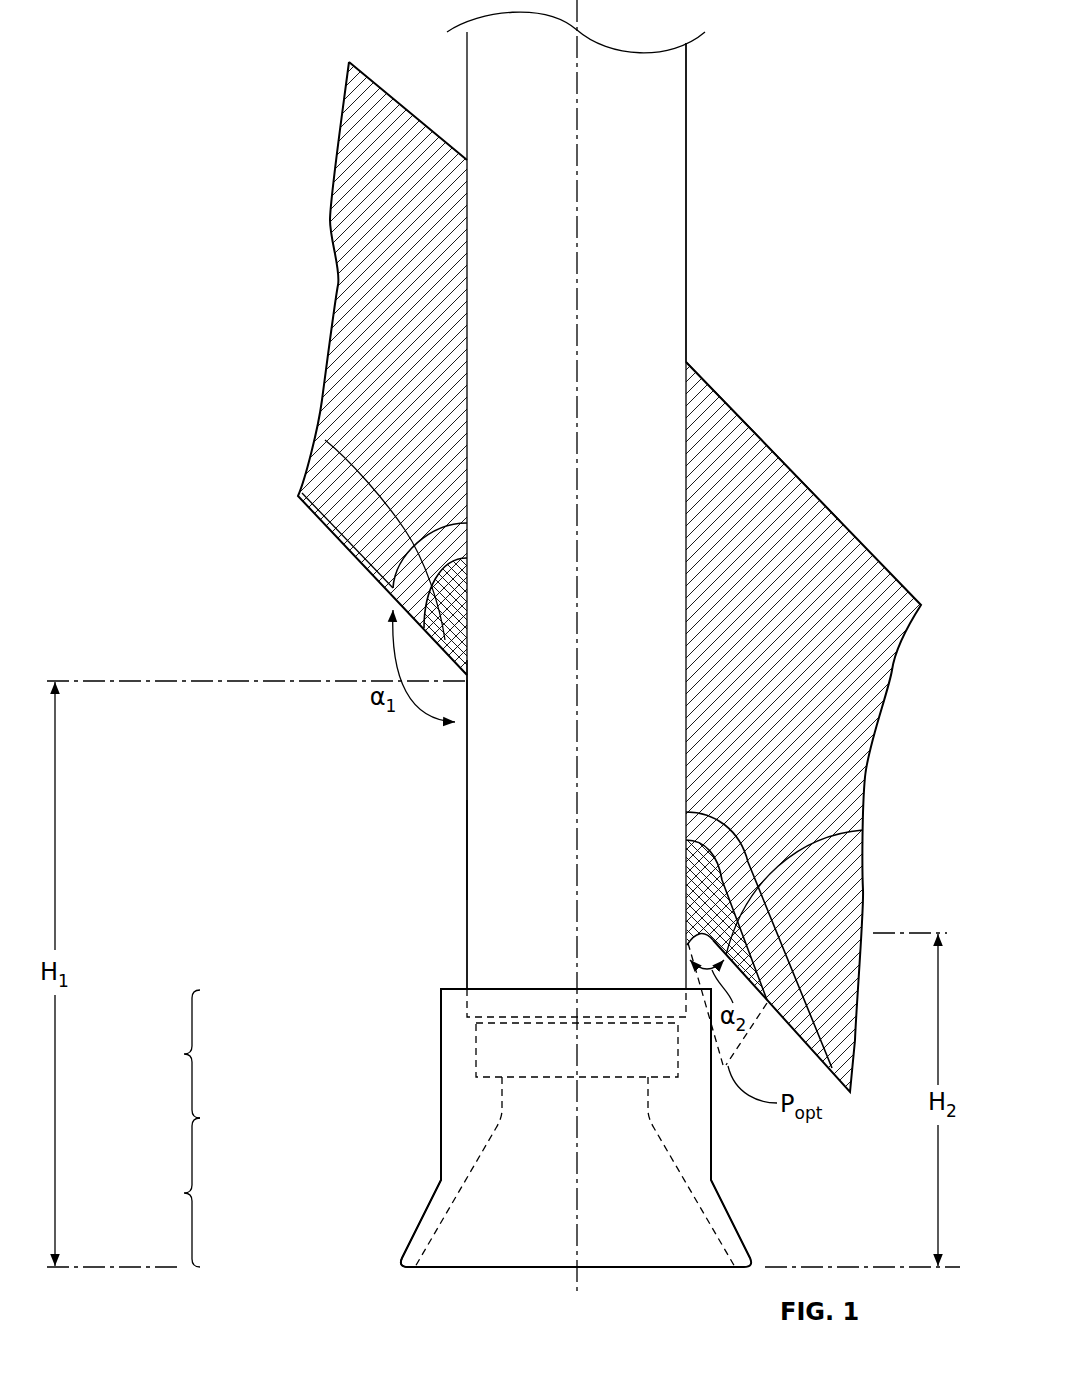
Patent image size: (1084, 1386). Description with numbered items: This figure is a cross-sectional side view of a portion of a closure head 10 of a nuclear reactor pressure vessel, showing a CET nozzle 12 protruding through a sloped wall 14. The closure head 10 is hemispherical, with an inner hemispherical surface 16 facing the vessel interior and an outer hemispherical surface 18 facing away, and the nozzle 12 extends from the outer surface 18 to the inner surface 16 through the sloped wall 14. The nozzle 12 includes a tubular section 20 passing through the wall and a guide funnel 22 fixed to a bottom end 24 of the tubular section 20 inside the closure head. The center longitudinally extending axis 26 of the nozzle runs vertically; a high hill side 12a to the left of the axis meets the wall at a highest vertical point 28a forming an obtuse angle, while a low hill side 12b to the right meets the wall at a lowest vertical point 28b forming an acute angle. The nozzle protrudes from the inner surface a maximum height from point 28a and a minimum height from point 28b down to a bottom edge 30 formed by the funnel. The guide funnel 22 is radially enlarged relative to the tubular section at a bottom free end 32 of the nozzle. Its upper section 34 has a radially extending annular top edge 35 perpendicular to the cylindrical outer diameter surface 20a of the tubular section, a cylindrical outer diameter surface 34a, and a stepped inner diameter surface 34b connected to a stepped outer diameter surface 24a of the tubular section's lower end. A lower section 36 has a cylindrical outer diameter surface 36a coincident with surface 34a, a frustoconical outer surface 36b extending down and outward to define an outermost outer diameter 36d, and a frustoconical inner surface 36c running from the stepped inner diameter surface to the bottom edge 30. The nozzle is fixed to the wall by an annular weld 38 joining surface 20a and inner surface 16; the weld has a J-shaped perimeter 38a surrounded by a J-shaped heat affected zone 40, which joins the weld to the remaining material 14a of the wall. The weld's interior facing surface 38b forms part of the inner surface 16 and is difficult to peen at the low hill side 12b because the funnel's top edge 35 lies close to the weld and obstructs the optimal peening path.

The closure head 10 is at (780, 157).
The CET nozzle 12 is at (692, 243).
The high hill side 12a is at (377, 826).
The low hill side 12b is at (741, 1046).
The sloped wall 14 is at (884, 762).
The remaining material 14a is at (808, 512).
The inner hemispherical surface 16 is at (330, 538).
The outer hemispherical surface 18 is at (739, 408).
The tubular section 20 is at (485, 772).
The cylindrical outer diameter surface 20a is at (467, 873).
The guide funnel 22 is at (757, 1174).
The bottom end 24 is at (458, 972).
The stepped outer diameter surface 24a is at (470, 1066).
The center longitudinally extending axis 26 is at (594, 464).
The highest vertical point 28a is at (468, 678).
The lowest vertical point 28b is at (686, 941).
The bottom edge 30 is at (657, 1268).
The bottom free end 32 is at (393, 1283).
The upper section 34 is at (427, 1084).
The cylindrical outer diameter surface 34a is at (441, 1063).
The stepped inner diameter surface 34b is at (555, 1012).
The annular top edge 35 is at (453, 988).
The lower section 36 is at (446, 1219).
The cylindrical outer diameter surface 36a is at (441, 1137).
The frustoconical outer surface 36b is at (420, 1217).
The frustoconical inner surface 36c is at (460, 1187).
The outermost outer diameter 36d is at (398, 1265).
The annular weld 38 is at (462, 617).
The J-shaped perimeter 38a is at (466, 579).
The interior facing surface 38b is at (325, 440).
The heat affected zone 40 is at (448, 543).